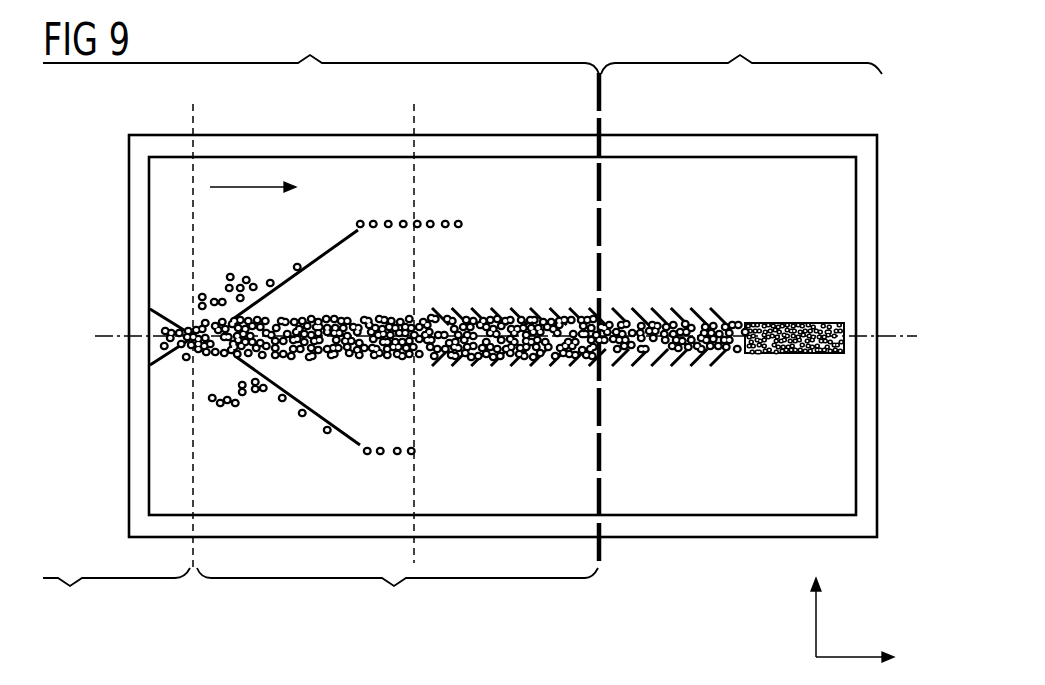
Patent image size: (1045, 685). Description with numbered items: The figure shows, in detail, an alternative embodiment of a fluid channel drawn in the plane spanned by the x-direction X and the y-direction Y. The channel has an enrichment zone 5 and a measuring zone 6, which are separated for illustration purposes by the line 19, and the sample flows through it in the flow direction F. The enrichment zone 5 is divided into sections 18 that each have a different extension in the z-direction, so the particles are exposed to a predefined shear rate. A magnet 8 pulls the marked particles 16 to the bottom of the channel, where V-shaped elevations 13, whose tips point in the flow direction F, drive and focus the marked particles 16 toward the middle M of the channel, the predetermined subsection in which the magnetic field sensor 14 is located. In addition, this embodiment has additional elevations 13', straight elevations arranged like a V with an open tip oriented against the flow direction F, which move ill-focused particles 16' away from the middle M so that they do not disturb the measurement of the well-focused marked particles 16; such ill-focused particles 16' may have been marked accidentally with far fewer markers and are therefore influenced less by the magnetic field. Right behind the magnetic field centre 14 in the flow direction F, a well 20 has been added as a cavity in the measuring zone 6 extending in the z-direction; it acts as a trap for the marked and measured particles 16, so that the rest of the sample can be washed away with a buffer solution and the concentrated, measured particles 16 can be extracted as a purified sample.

The enrichment zone 5 is at (321, 49).
The measuring zone 6 is at (741, 49).
The magnet 8 is at (644, 148).
The elevations 13 is at (579, 303).
The additional elevations 13' is at (268, 337).
The magnetic field sensor 14 is at (752, 322).
The marked particles 16 is at (455, 372).
The ill-focused particles 16' is at (325, 347).
The sections 18 is at (320, 595).
The line 19 is at (597, 100).
The well 20 is at (802, 322).
The flow direction F is at (258, 192).
The middle of the fluid channel M is at (900, 336).
The x-direction X is at (863, 662).
The y-direction Y is at (825, 615).